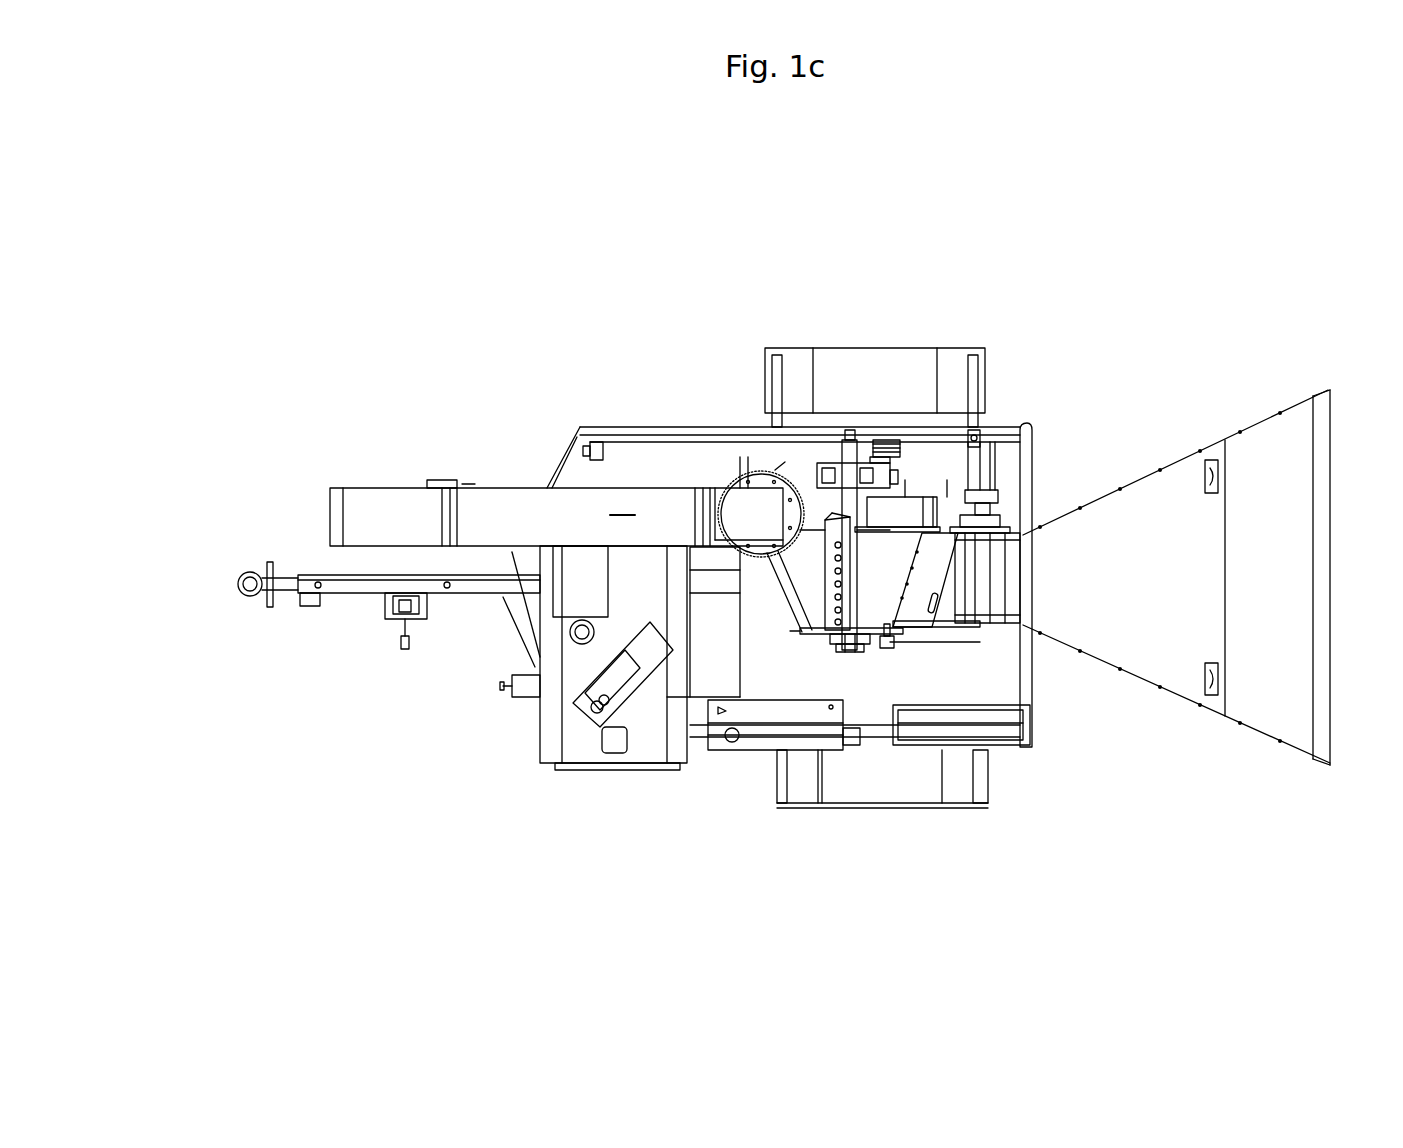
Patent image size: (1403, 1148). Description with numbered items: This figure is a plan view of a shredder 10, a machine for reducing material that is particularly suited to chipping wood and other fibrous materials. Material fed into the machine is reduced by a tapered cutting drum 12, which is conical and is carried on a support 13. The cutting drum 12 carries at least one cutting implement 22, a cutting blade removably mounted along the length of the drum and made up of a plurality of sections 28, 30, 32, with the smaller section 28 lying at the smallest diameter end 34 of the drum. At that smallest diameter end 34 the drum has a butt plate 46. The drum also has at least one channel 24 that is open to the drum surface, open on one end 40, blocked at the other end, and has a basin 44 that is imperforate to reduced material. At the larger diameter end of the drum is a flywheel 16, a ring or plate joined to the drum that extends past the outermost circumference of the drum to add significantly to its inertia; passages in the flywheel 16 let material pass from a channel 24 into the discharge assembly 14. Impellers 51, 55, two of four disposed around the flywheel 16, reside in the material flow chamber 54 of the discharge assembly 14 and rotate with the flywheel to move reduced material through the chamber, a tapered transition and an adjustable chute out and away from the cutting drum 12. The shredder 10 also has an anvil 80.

The shredder 10 is at (461, 266).
The cutting drum 12 is at (860, 600).
The support 13 is at (763, 752).
The discharge assembly 14 is at (813, 470).
The flywheel 16 is at (997, 512).
The cutting implement 22 is at (888, 533).
The channel 24 is at (848, 652).
The smaller section 28 is at (810, 630).
The section 30 is at (815, 600).
The section 32 is at (827, 568).
The smallest diameter end 34 is at (882, 612).
The open end 40 is at (857, 483).
The basin 44 is at (858, 592).
The butt plate 46 is at (815, 640).
The impeller 51 is at (930, 508).
The material flow chamber 54 is at (913, 493).
The impeller 55 is at (813, 470).
The anvil 80 is at (1037, 713).